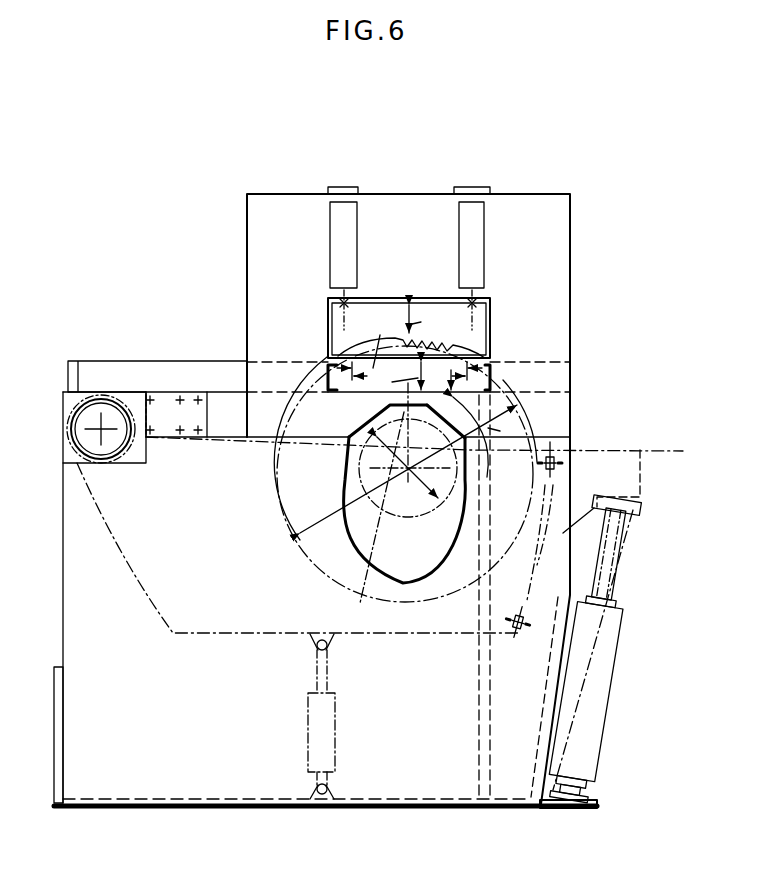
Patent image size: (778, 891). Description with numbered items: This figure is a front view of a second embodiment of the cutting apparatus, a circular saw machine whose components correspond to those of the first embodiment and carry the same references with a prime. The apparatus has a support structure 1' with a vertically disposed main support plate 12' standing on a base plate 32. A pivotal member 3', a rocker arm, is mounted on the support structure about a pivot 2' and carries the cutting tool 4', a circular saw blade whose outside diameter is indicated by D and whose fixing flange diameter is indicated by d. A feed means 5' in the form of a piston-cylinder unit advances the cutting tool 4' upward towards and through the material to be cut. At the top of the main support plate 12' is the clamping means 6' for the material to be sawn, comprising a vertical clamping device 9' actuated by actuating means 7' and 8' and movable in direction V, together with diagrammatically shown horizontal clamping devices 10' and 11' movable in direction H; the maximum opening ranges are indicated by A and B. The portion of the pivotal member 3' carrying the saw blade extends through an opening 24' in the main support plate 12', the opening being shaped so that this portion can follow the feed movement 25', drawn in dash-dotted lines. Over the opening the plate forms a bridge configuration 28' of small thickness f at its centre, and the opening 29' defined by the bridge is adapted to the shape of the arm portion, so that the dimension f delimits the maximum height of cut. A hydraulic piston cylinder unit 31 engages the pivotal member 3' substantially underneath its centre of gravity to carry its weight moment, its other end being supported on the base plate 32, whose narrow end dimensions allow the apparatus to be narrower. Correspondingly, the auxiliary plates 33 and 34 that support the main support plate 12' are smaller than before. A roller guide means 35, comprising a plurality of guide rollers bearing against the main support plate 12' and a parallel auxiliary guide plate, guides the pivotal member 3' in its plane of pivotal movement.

The support structure 1' is at (325, 836).
The pivot 2' is at (103, 447).
The pivotal member 3' is at (298, 580).
The cutting tool 4' is at (384, 474).
The feed means 5' is at (597, 627).
The clamping means 6' is at (430, 456).
The actuating means 7' is at (495, 266).
The actuating means 8' is at (316, 266).
The vertical clamping device 9' is at (409, 307).
The horizontal clamping device 10' is at (319, 351).
The horizontal clamping device 11' is at (459, 353).
The main support plate 12' is at (373, 614).
The opening 24' is at (397, 465).
The feed movement 25' is at (375, 522).
The bridge configuration 28' is at (359, 421).
The opening 29' is at (477, 449).
The hydraulic piston cylinder unit 31 is at (313, 770).
The base plate 32 is at (125, 803).
The auxiliary plate 33 is at (60, 810).
The auxiliary plate 34 is at (534, 802).
The roller guide means 35 is at (558, 469).